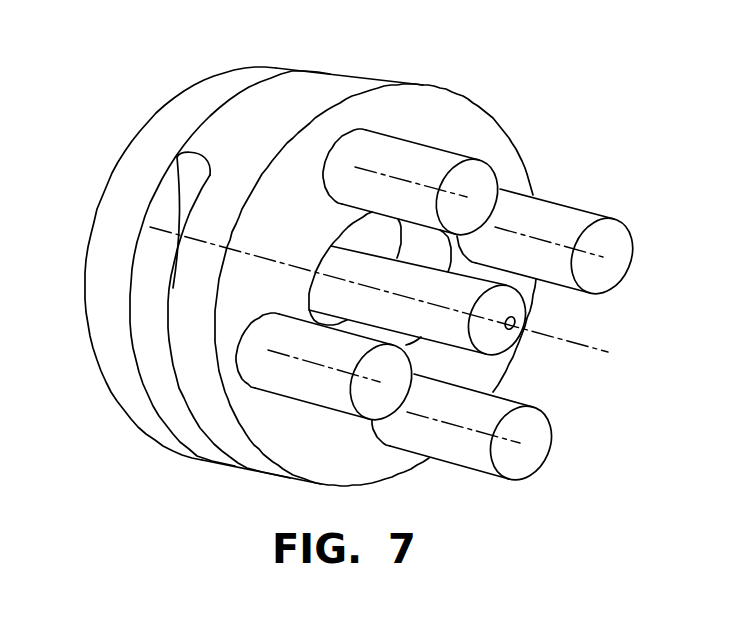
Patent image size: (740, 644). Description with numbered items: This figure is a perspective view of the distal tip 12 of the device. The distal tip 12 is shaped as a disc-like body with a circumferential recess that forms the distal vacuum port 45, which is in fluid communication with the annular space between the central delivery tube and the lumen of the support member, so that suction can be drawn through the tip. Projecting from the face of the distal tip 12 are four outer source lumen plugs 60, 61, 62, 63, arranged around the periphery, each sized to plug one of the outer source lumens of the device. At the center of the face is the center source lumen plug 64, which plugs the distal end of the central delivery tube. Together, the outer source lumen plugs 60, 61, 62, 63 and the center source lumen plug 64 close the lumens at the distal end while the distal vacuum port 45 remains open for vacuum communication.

The distal tip 12 is at (122, 163).
The distal vacuum port 45 is at (146, 295).
The outer source lumen plug 60 is at (402, 152).
The outer source lumen plug 61 is at (297, 390).
The outer source lumen plug 62 is at (457, 460).
The outer source lumen plug 63 is at (572, 217).
The center source lumen plug 64 is at (333, 260).